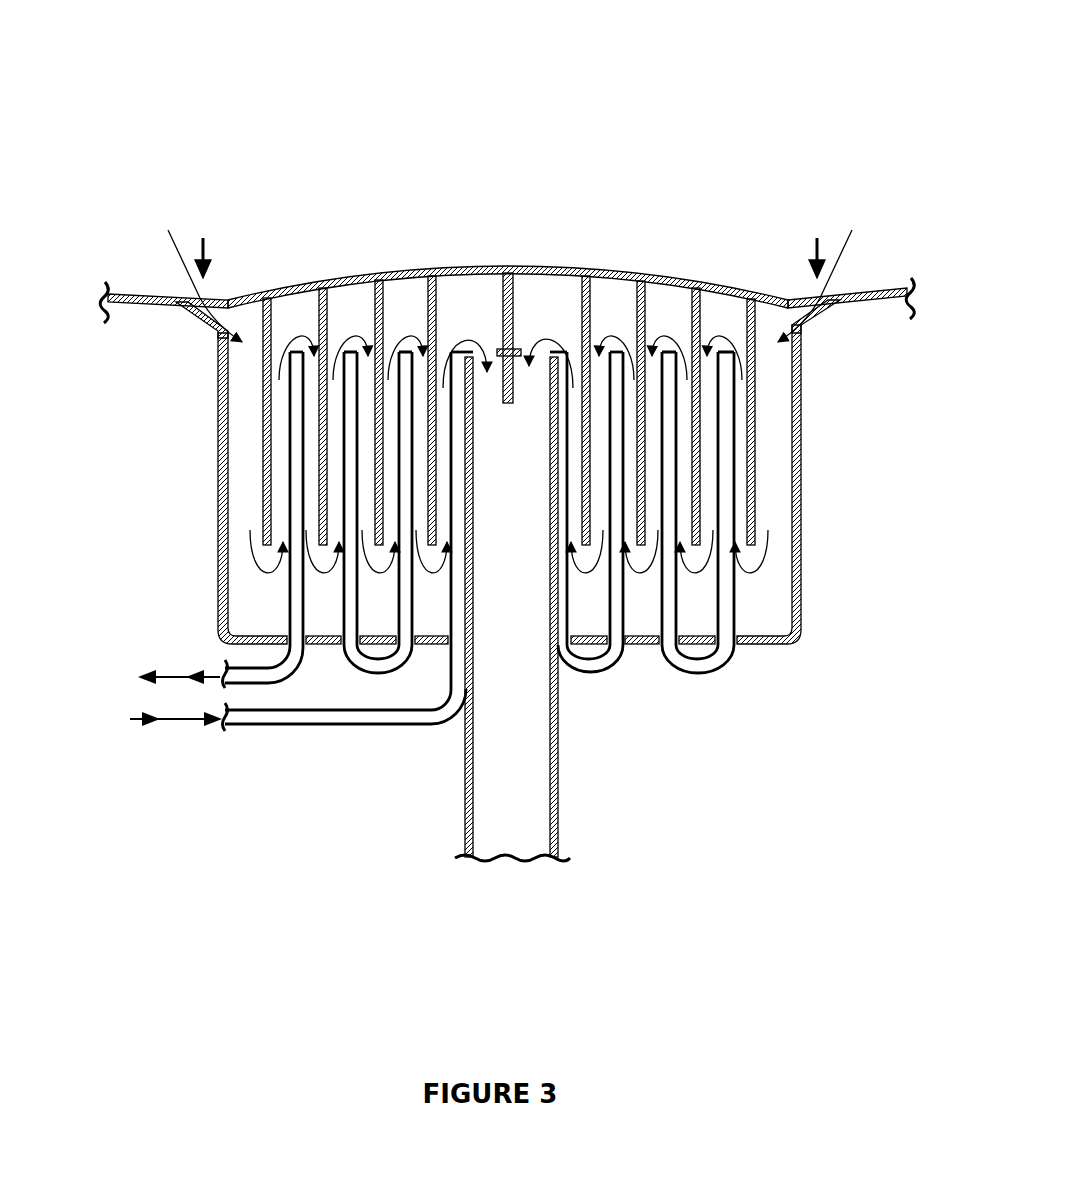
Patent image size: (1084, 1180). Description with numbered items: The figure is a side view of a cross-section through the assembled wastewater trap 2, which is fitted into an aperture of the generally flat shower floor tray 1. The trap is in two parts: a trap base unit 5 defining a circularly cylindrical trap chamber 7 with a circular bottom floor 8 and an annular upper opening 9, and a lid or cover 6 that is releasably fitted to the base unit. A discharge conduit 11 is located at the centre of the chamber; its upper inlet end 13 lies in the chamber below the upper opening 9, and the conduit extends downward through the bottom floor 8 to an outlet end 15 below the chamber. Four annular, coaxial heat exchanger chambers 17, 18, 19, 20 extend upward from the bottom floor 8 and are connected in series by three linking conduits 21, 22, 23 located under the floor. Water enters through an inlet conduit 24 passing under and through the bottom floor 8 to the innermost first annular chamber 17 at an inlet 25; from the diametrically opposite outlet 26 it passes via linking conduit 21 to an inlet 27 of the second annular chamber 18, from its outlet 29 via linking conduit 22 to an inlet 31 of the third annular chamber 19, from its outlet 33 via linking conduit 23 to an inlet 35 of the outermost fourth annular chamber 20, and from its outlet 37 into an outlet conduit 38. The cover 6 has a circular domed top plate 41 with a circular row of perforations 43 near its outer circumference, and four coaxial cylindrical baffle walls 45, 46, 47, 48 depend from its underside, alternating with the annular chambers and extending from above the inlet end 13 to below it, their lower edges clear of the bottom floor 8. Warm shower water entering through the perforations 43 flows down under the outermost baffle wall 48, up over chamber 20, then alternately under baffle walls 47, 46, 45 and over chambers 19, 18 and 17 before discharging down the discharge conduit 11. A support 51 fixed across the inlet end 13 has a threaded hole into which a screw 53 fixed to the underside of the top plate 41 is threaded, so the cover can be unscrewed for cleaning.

The floor tray 1 is at (895, 290).
The wastewater trap 2 is at (664, 92).
The trap base unit 5 is at (802, 477).
The lid or cover 6 is at (658, 280).
The trap chamber 7 is at (790, 640).
The bottom floor 8 is at (797, 641).
The upper opening 9 is at (250, 318).
The discharge conduit 11 is at (560, 797).
The upper inlet end 13 is at (552, 350).
The outlet end 15 is at (528, 858).
The first annular chamber 17 is at (452, 350).
The second annular chamber 18 is at (403, 350).
The third annular chamber 19 is at (347, 350).
The fourth annular chamber 20 is at (295, 350).
The linking conduit 21 is at (597, 668).
The linking conduit 22 is at (373, 663).
The linking conduit 23 is at (712, 670).
The inlet conduit 24 is at (302, 718).
The inlet 25 is at (460, 650).
The outlet 26 is at (573, 667).
The inlet 27 is at (618, 642).
The outlet 29 is at (407, 645).
The inlet 31 is at (352, 658).
The outlet 33 is at (677, 645).
The inlet 35 is at (727, 640).
The outlet 37 is at (297, 652).
The outlet conduit 38 is at (268, 677).
The domed top plate 41 is at (465, 267).
The perforations 43 is at (512, 271).
The baffle wall 45 is at (433, 548).
The baffle wall 46 is at (382, 548).
The baffle wall 47 is at (327, 548).
The baffle wall 48 is at (275, 547).
The support 51 is at (515, 349).
The screw 53 is at (507, 273).